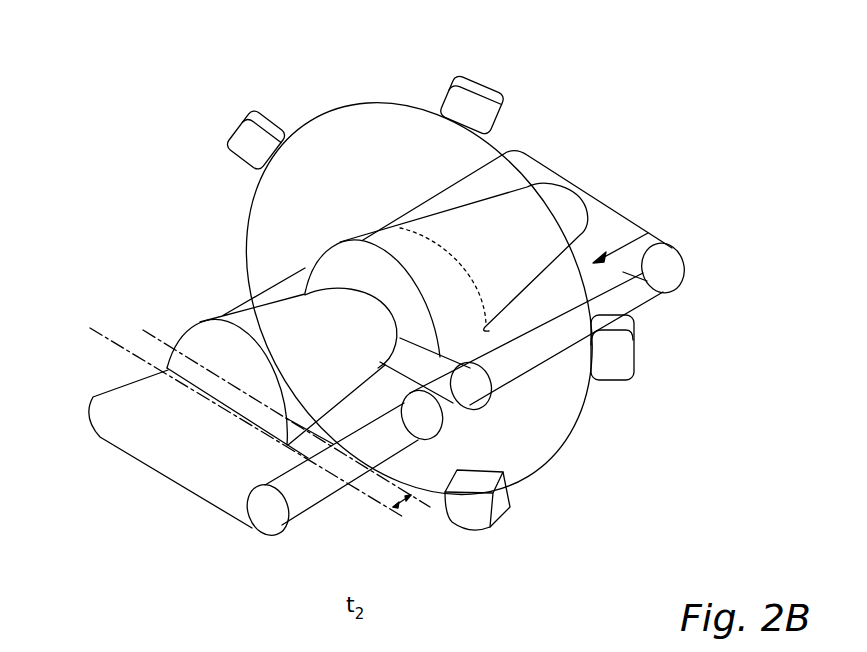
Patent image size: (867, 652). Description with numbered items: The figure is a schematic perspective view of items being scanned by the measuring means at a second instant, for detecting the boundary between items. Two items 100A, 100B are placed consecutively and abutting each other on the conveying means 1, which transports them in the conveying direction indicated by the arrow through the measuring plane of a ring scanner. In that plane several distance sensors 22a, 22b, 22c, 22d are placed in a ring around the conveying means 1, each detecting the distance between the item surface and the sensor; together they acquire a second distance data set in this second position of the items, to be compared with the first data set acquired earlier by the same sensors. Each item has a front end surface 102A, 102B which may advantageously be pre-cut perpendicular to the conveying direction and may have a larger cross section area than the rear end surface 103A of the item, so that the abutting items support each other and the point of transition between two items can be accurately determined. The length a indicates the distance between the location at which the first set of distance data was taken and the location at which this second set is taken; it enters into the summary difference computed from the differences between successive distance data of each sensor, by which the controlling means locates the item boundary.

The conveying means 1 is at (617, 227).
The distance sensor 22a is at (473, 517).
The distance sensor 22b is at (620, 352).
The distance sensor 22c is at (482, 107).
The distance sensor 22d is at (245, 138).
The item 100A is at (265, 337).
The item 100B is at (553, 207).
The front end surface 102A is at (213, 358).
The front end surface 102B is at (420, 327).
The rear end surface 103A is at (368, 295).
The length between scan locations a is at (402, 509).